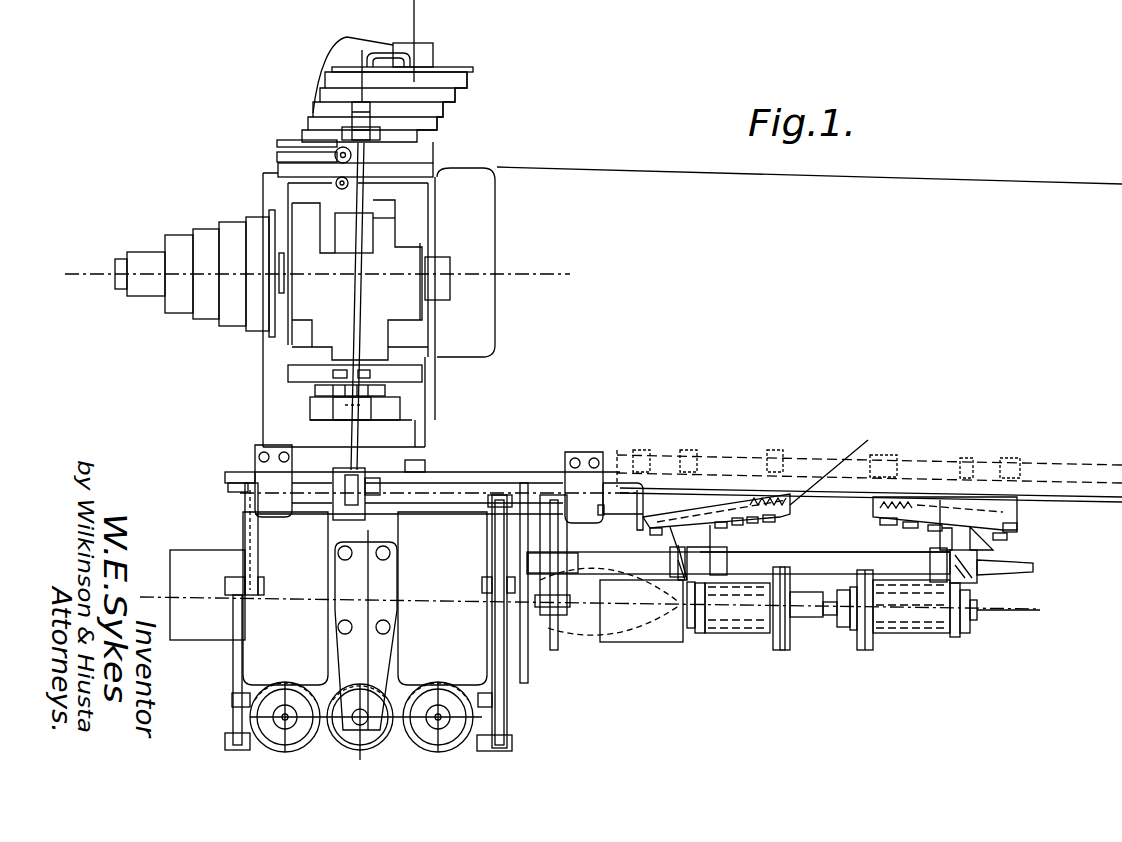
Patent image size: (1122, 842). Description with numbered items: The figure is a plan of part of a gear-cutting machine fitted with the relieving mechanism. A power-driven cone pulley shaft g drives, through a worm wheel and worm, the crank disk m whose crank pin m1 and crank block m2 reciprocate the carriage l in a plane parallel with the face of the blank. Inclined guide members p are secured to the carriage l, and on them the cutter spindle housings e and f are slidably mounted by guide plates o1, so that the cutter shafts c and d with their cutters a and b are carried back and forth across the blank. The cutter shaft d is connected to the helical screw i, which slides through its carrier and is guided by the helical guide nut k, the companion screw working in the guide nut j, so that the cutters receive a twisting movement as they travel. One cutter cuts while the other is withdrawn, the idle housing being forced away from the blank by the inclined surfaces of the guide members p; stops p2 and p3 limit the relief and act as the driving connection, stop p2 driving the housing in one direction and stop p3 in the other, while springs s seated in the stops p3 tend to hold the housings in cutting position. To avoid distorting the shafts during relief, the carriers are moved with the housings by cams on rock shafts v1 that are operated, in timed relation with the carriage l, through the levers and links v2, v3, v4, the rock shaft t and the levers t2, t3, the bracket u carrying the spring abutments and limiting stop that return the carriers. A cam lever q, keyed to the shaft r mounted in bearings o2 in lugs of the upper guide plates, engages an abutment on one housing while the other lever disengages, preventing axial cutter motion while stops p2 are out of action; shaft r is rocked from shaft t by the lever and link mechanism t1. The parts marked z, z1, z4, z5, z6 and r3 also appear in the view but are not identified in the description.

The plate stack z is at (345, 80).
The stepped plates z1 is at (458, 96).
The bearing plate z4 is at (335, 146).
The gear block z5 is at (378, 235).
The top plate z6 is at (405, 170).
The pulley shaft g is at (282, 292).
The crank disk m is at (412, 380).
The crank pin m1 is at (315, 390).
The crank block m2 is at (330, 405).
The rock shaft t is at (455, 515).
The lever and link mechanism t1 is at (526, 668).
The lever t2 is at (345, 515).
The lever t3 is at (427, 470).
The carriage l is at (614, 462).
The rock shaft v1 is at (512, 742).
The lever or link v2 is at (225, 742).
The lever or link v3 is at (508, 700).
The lever or link v4 is at (495, 570).
The helical guide nut j is at (207, 595).
The bracket u is at (365, 636).
The helical guide nut k is at (555, 640).
The helical screw i is at (627, 568).
The shaft r is at (838, 565).
The cam lever q is at (1035, 568).
The cutter shaft d is at (685, 617).
The cutter spindle housing f is at (700, 628).
The cutter b is at (768, 650).
The cutter shaft c is at (815, 613).
The cutter a is at (866, 652).
The cutter spindle housing e is at (933, 620).
The spring s is at (900, 476).
The inclined guide member p is at (993, 500).
The stop p2 is at (1020, 525).
The stop p3 is at (868, 507).
The guide plate o1 is at (940, 507).
The bearing o2 is at (963, 583).
The rod r3 is at (834, 462).